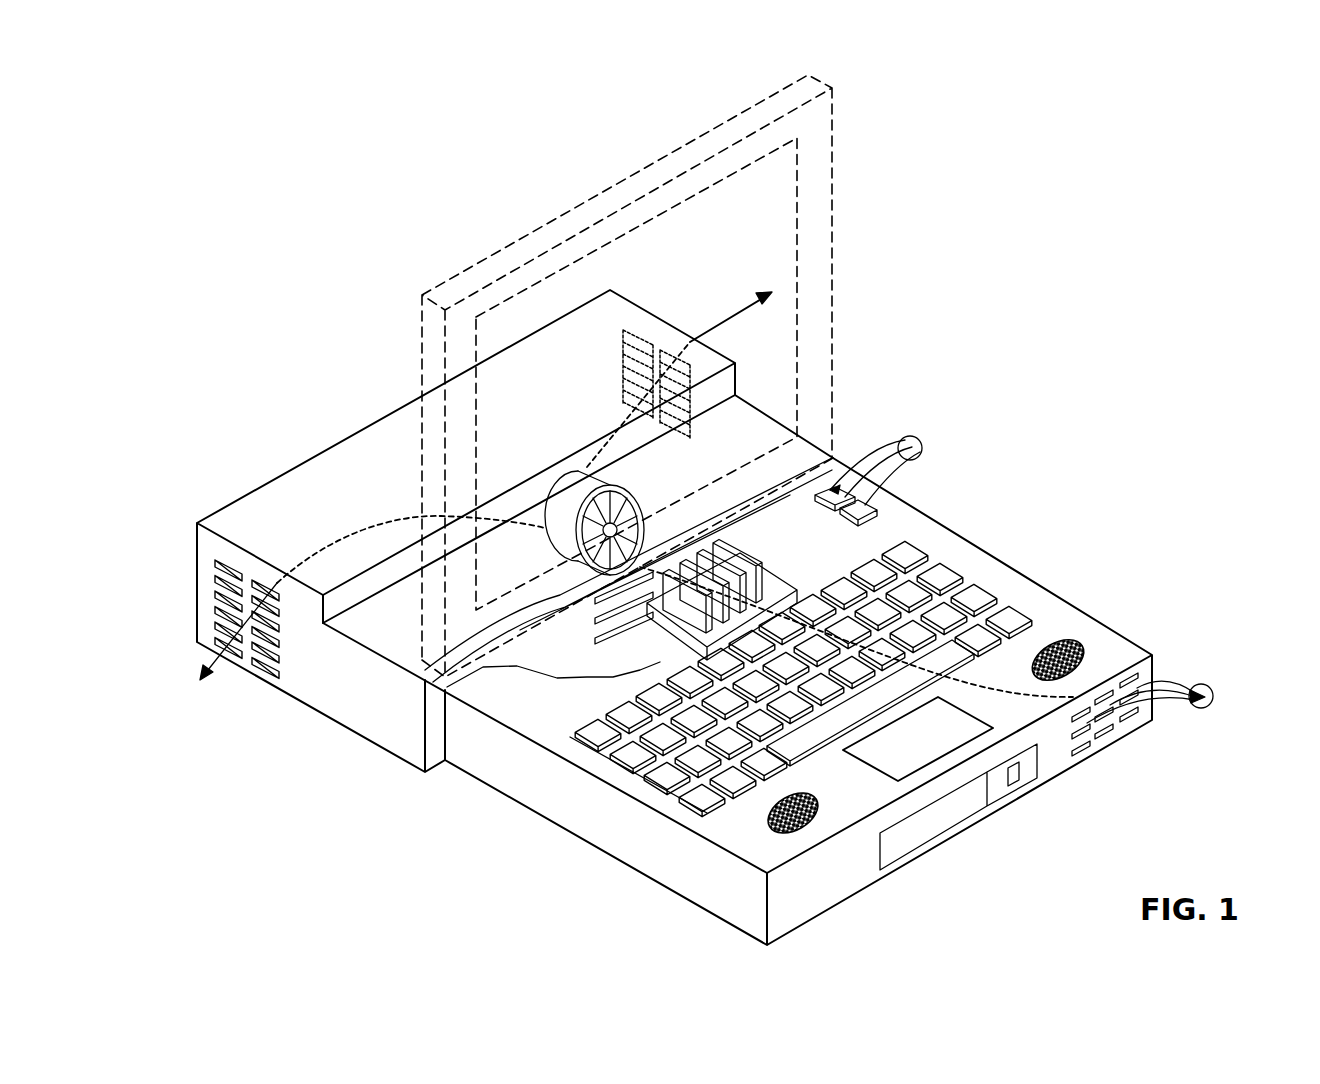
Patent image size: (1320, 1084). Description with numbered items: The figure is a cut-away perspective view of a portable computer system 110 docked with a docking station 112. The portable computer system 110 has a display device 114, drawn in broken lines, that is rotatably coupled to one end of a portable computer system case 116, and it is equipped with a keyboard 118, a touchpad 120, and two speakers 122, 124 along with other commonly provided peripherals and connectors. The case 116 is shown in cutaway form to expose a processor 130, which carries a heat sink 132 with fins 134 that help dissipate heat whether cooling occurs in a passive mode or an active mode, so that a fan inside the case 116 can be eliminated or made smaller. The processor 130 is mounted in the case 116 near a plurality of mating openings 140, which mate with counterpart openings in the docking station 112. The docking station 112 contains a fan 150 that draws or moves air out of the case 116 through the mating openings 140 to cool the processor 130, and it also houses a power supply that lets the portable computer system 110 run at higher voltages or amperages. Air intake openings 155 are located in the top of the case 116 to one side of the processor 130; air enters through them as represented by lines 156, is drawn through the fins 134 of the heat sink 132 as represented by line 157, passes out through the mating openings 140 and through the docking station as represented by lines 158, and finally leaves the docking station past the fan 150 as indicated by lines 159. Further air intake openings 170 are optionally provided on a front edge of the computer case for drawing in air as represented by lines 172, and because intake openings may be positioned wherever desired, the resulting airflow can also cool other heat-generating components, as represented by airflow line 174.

The portable computer system 110 is at (674, 617).
The docking station 112 is at (330, 447).
The display device 114 is at (837, 211).
The portable computer system case 116 is at (505, 767).
The keyboard 118 is at (983, 590).
The touchpad 120 is at (925, 748).
The speaker 122 is at (812, 825).
The speaker 124 is at (1067, 640).
The processor 130 is at (640, 673).
The heat sink 132 is at (745, 590).
The fins 134 is at (427, 653).
The mating openings 140 is at (597, 622).
The fan 150 is at (582, 487).
The air intake openings 155 is at (883, 512).
The lines 156 is at (905, 437).
The line 157 is at (885, 521).
The lines 158 is at (677, 527).
The lines 159 is at (340, 542).
The air intake openings 170 is at (1087, 748).
The lines 172 is at (1213, 707).
The airflow line 174 is at (1013, 690).